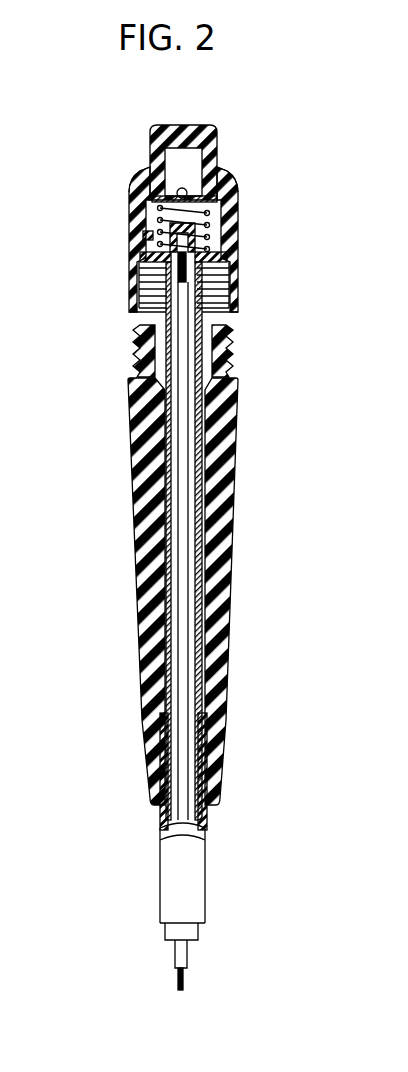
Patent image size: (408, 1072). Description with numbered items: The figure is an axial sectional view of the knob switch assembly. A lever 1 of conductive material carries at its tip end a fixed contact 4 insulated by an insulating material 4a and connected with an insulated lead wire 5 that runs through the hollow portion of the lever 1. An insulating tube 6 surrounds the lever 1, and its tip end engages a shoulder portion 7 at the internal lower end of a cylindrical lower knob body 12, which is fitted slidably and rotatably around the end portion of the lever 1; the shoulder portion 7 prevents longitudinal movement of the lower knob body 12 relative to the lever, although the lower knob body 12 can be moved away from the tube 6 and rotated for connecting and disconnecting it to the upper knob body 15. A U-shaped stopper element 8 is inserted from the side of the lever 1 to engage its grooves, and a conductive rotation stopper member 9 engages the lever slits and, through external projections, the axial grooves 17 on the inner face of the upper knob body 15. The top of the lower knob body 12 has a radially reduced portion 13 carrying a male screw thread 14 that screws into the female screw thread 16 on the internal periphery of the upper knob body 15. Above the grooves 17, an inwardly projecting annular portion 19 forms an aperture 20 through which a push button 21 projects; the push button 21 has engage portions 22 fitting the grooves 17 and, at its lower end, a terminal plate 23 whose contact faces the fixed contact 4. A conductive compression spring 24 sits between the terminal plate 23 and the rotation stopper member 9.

The lever 1 is at (200, 487).
The fixed contact 4 is at (221, 252).
The insulating material 4a is at (232, 275).
The insulated lead wire 5 is at (182, 540).
The insulating tube 6 is at (162, 828).
The shoulder portion 7 is at (207, 735).
The stopper element 8 is at (140, 268).
The rotation stopper member 9 is at (140, 247).
The lower knob body 12 is at (240, 436).
The threaded neck 13 is at (233, 355).
The male screw thread 14 is at (135, 352).
The upper knob body 15 is at (225, 204).
The female screw thread 16 is at (135, 300).
The axial grooves 17 is at (170, 230).
The inwardly projecting annular portion 19 is at (138, 178).
The aperture 20 is at (224, 172).
The push button 21 is at (197, 133).
The engage portions 22 is at (150, 207).
The terminal plate 23 is at (236, 184).
The compression spring 24 is at (143, 235).